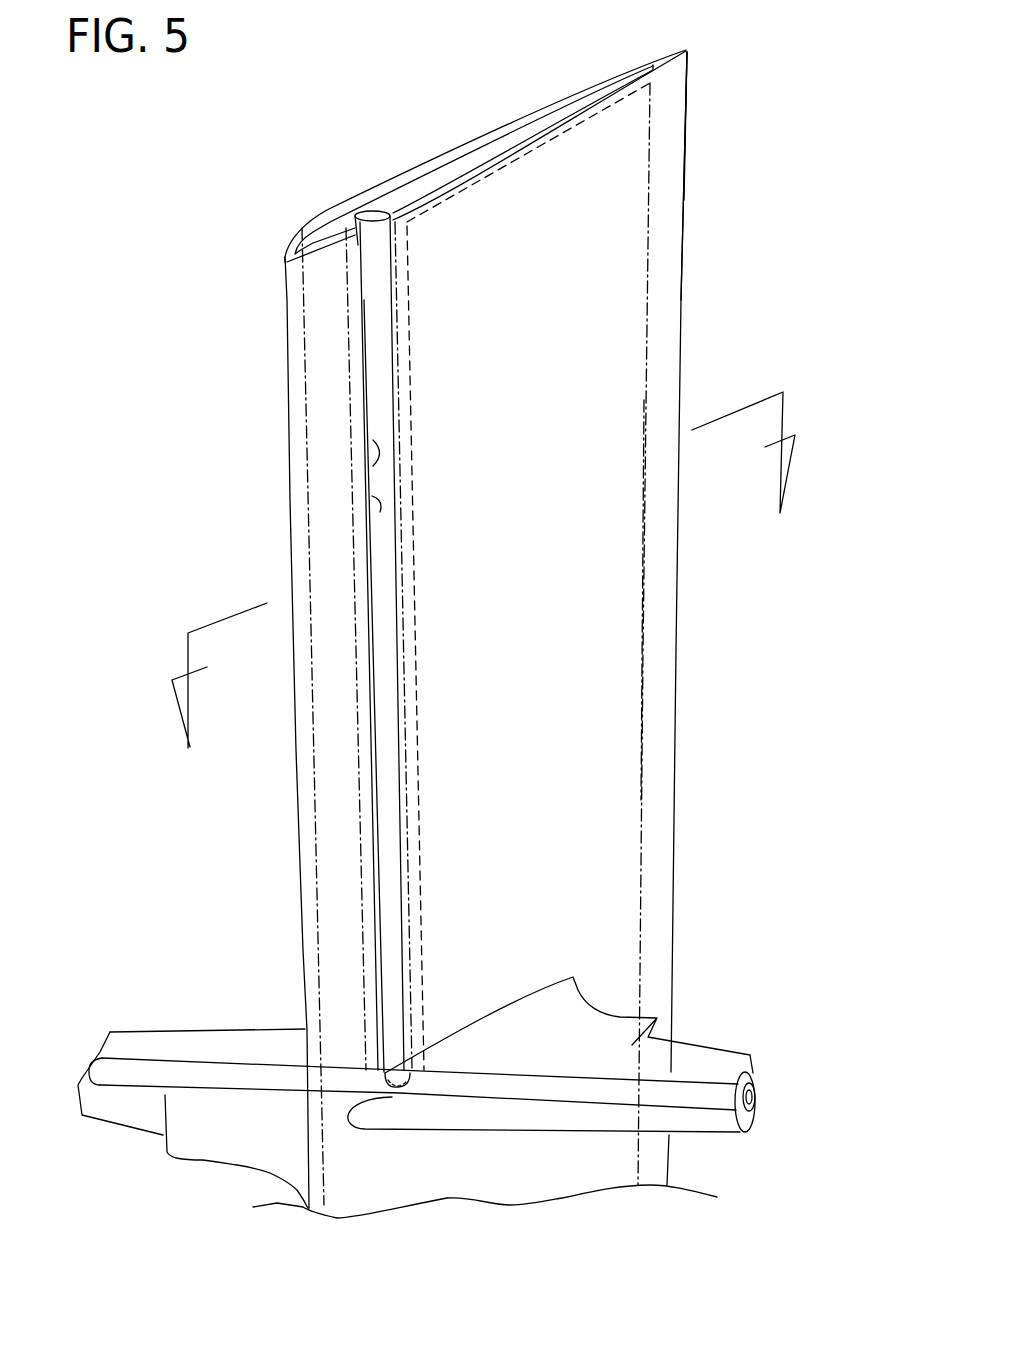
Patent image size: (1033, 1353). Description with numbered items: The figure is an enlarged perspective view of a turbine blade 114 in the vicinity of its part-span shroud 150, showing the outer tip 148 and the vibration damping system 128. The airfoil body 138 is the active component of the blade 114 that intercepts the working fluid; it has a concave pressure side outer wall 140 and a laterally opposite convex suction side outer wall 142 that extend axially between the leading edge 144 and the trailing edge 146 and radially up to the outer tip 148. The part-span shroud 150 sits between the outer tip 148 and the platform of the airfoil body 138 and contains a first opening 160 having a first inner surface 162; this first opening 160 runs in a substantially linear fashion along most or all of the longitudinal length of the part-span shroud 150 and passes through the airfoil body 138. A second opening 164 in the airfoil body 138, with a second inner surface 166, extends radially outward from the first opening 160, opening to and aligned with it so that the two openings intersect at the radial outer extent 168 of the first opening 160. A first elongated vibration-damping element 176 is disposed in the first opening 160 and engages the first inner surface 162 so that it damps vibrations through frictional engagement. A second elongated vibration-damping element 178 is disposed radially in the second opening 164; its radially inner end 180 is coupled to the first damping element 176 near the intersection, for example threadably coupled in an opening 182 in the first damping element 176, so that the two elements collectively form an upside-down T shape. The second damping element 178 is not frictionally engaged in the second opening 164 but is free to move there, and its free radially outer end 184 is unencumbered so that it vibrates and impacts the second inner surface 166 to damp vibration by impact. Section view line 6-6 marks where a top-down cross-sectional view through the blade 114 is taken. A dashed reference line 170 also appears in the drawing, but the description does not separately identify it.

The blade 114 is at (705, 39).
The vibration damping system 128 is at (306, 993).
The airfoil body 138 is at (547, 567).
The pressure side outer wall 140 is at (620, 688).
The suction side outer wall 142 is at (487, 130).
The leading edge 144 is at (288, 446).
The trailing edge 146 is at (686, 216).
The outer tip 148 is at (436, 180).
The part-span shroud 150 is at (188, 1029).
The first opening 160 is at (88, 1070).
The first inner surface 162 is at (748, 1110).
The second opening 164 is at (357, 397).
The second inner surface 166 is at (373, 452).
The radial outer extent 168 is at (414, 1068).
The axis 170 is at (620, 156).
The first elongated vibration-damping element 176 is at (755, 1098).
The second elongated vibration-damping element 178 is at (380, 498).
The radially inner end 180 is at (382, 1073).
The opening 182 is at (405, 1040).
The free radially outer end 184 is at (373, 312).
The view line 6- 6 is at (489, 594).